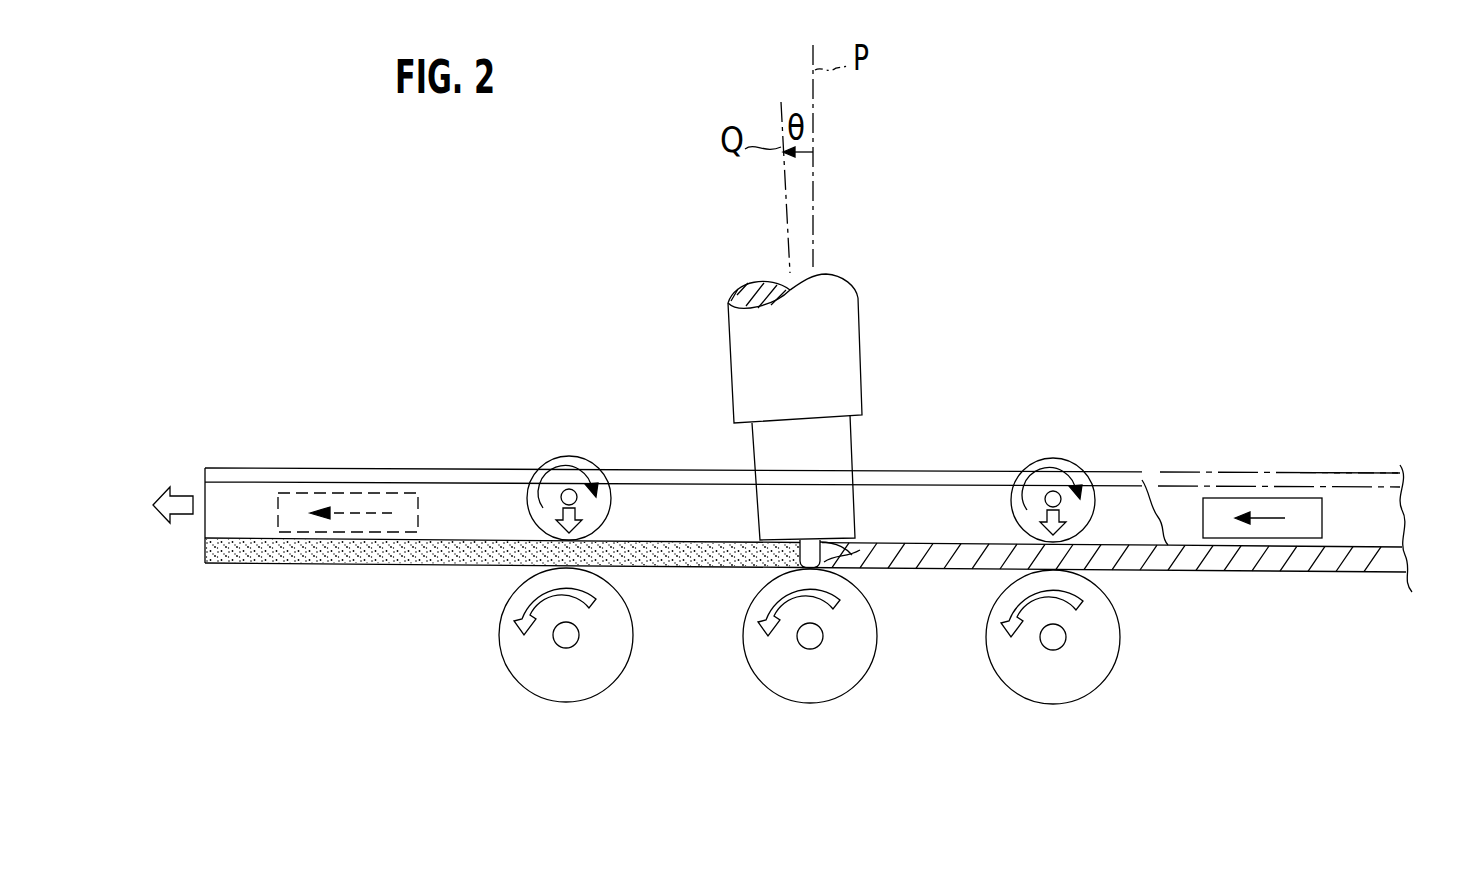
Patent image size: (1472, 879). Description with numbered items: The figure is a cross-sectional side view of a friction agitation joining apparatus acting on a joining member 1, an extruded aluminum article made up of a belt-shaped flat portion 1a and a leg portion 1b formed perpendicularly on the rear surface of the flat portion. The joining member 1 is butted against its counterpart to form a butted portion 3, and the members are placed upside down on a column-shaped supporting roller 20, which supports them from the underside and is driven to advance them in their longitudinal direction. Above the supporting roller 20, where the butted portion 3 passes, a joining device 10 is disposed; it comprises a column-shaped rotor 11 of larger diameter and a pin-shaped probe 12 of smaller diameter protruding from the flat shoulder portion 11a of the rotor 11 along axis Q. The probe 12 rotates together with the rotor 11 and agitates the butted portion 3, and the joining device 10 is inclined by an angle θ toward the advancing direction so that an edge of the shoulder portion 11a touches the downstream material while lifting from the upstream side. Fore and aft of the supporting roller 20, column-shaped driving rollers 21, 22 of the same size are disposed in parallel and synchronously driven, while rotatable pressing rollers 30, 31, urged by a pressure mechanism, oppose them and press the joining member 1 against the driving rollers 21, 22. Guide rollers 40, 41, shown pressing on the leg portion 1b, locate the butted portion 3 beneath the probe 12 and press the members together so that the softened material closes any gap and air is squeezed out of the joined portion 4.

The joining member 1 is at (676, 541).
The belt-shaped flat portion 1a is at (1378, 553).
The leg portion 1b is at (1346, 473).
The butted portion 3 is at (1265, 573).
The joined portion 4 is at (372, 565).
The joining device 10 is at (864, 322).
The rotor 11 is at (845, 444).
The shoulder portion 11a is at (852, 554).
The probe 12 is at (832, 568).
The supporting roller 20 is at (745, 657).
The driving roller 21 is at (500, 642).
The driving roller 22 is at (988, 671).
The pressing roller 30 is at (573, 458).
The pressing roller 31 is at (1058, 460).
The guide roller 40 is at (375, 493).
The guide roller 41 is at (1265, 498).